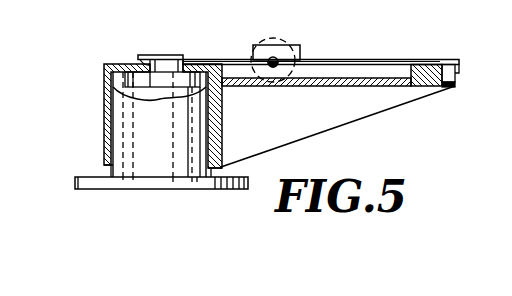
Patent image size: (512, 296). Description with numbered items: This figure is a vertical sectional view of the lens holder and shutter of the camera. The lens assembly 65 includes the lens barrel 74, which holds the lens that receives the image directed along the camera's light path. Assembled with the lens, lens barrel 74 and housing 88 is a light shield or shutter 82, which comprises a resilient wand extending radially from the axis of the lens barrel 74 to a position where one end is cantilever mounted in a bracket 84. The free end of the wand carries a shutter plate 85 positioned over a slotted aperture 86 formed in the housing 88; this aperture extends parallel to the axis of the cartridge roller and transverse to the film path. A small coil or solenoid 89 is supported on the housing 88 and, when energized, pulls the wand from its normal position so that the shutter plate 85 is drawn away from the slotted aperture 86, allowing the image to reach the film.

The lens assembly 65 is at (100, 75).
The lens barrel 74 is at (118, 139).
The light shield or shutter 82 is at (358, 57).
The bracket 84 is at (440, 68).
The shutter plate 85 is at (199, 57).
The slotted aperture 86 is at (157, 55).
The housing 88 is at (315, 123).
The coil or solenoid 89 is at (283, 42).